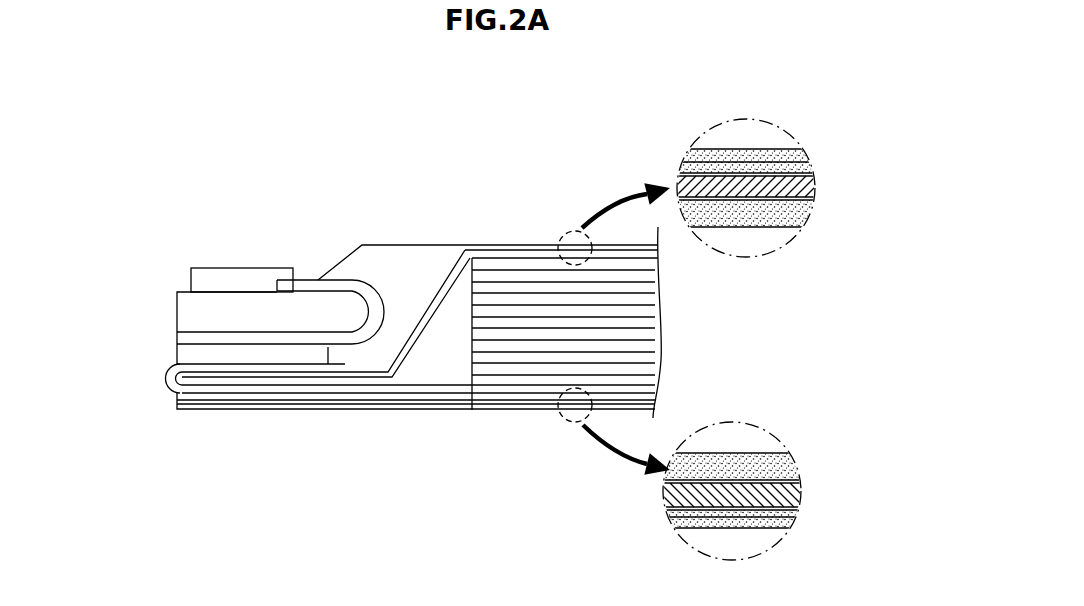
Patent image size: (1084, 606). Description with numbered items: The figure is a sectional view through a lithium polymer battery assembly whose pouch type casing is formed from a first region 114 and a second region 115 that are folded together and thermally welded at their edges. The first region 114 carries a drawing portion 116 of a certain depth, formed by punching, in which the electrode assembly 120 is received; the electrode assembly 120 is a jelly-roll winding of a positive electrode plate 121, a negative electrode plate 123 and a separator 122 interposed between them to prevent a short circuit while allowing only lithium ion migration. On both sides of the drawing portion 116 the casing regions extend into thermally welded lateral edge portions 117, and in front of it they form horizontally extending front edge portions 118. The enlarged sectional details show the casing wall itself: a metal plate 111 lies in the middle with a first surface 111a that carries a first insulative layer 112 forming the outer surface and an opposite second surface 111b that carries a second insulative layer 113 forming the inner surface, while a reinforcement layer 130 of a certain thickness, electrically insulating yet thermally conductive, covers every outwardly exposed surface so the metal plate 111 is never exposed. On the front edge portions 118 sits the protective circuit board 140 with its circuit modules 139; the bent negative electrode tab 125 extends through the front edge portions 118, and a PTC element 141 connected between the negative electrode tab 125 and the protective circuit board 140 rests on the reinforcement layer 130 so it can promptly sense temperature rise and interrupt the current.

The metal plate 111 is at (815, 188).
The first surface 111a is at (805, 175).
The second surface 111b is at (812, 203).
The first insulative layer 112 is at (800, 165).
The second insulative layer 113 is at (808, 213).
The first region 114 is at (538, 218).
The second region 115 is at (511, 430).
The drawing portion 116 is at (498, 258).
The lateral edge portions 117 is at (397, 262).
The front edge portions 118 is at (316, 415).
The electrode assembly 120 is at (822, 276).
The positive electrode plate 121 is at (645, 266).
The separator 122 is at (643, 280).
The negative electrode plate 123 is at (642, 290).
The negative electrode tab 125 is at (436, 390).
The reinforcement layer 130 is at (470, 410).
The circuit modules 139 is at (241, 268).
The protective circuit board 140 is at (183, 310).
The positive temperature coefficient (PTC) element 141 is at (185, 347).